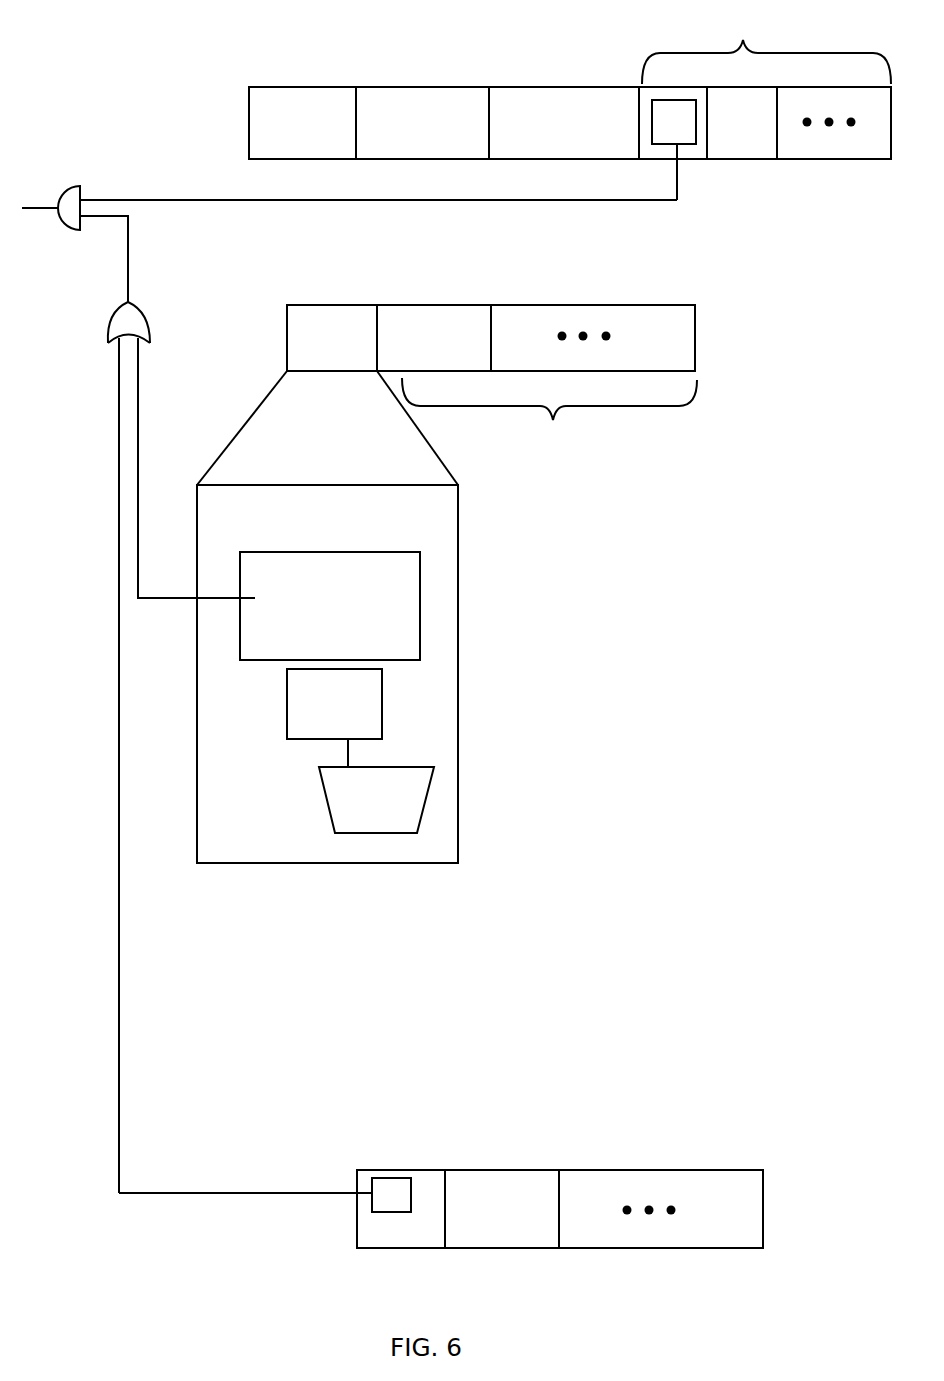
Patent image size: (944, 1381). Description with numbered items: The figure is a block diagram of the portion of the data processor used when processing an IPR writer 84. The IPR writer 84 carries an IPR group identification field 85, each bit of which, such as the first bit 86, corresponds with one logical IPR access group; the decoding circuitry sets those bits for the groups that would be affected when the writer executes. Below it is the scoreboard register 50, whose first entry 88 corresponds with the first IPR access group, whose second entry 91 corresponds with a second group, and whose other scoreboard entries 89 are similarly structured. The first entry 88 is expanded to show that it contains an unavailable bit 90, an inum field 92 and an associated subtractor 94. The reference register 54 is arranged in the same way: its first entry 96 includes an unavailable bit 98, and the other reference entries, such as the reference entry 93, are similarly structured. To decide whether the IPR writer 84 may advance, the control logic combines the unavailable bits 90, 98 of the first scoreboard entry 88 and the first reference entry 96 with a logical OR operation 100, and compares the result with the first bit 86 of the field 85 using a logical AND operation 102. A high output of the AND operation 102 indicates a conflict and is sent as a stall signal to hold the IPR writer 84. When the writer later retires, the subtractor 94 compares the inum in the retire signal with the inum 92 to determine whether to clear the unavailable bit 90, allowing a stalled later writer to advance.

The IPR writer 84 is at (810, 160).
The IPR group identification field 85 is at (766, 47).
The bit 86 is at (662, 133).
The logical AND operation 102 is at (78, 187).
The logical OR operation 100 is at (150, 320).
The scoreboard register 50 is at (677, 305).
The second entry of the scoreboard register 91 is at (420, 349).
The other scoreboard entries 89 is at (549, 414).
The first entry of the scoreboard register 88 is at (459, 678).
The unavailable bit 90 is at (318, 636).
The inum field 92 is at (323, 726).
The subtractor 94 is at (364, 822).
The reference register 54 is at (746, 1170).
The first entry of the reference register 96 is at (405, 1242).
The unavailable bit 98 is at (379, 1205).
The reference entry 93 is at (486, 1220).